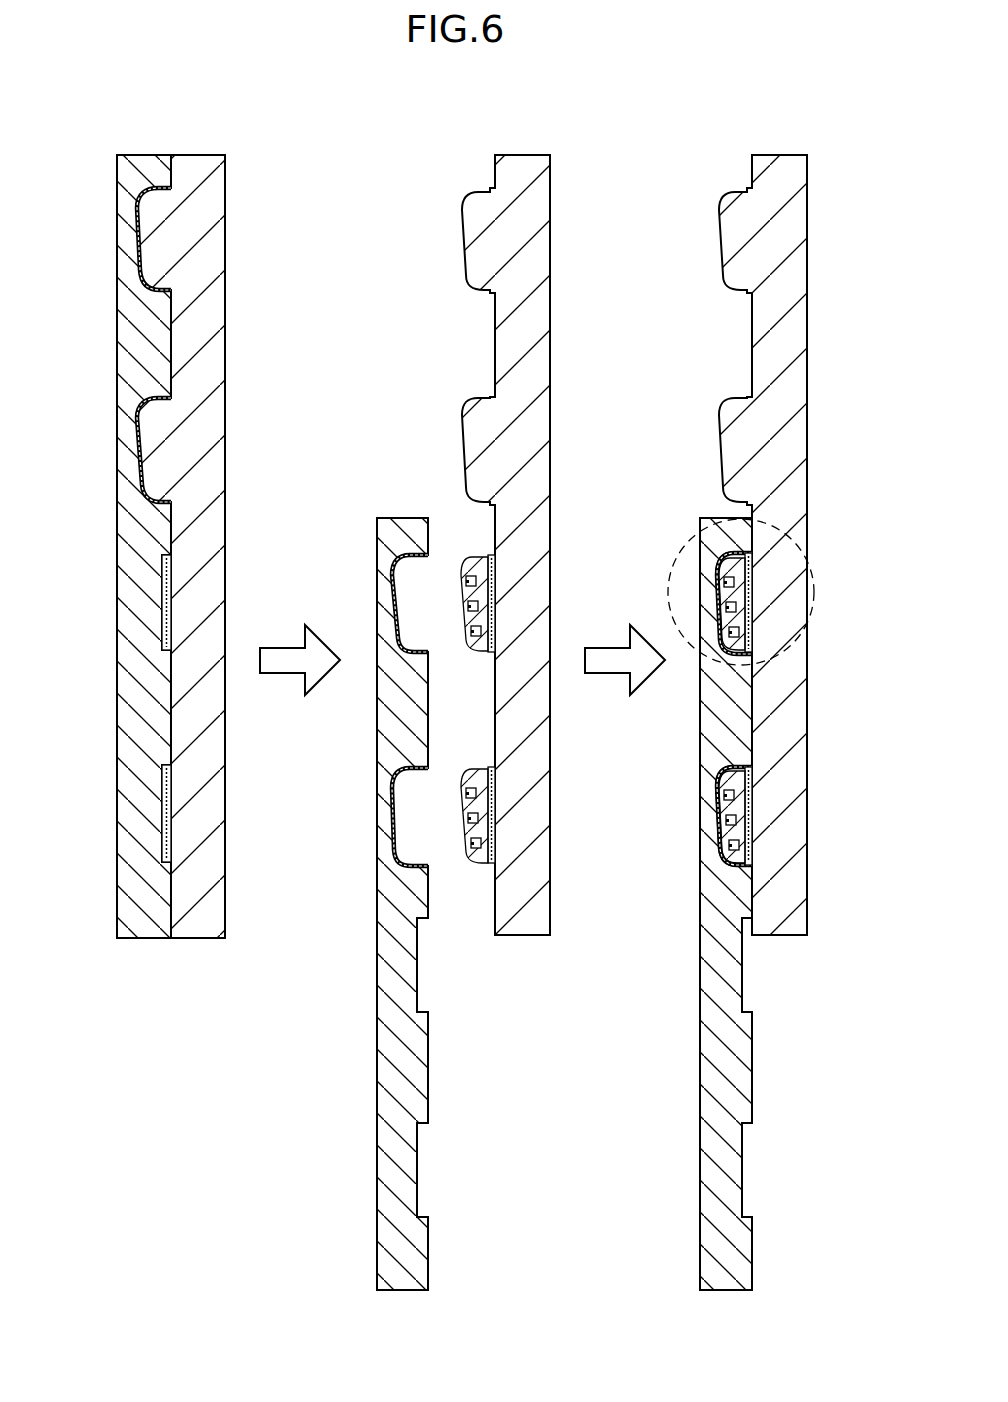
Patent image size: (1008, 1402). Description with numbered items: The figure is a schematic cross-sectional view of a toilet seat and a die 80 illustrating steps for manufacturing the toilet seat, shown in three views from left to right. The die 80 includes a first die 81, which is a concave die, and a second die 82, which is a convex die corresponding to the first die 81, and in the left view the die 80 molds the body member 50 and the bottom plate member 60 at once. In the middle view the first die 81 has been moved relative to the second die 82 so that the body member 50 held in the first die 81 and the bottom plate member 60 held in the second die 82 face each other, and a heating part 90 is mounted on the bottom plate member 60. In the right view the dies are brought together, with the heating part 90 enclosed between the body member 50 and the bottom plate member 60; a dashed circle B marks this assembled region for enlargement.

The die 80 is at (212, 93).
The first die 81 is at (141, 166).
The second die 82 is at (197, 166).
The body member 50 is at (137, 248).
The bottom plate member 60 is at (162, 601).
The heating part 90 is at (483, 653).
The enlarged region B is at (813, 566).